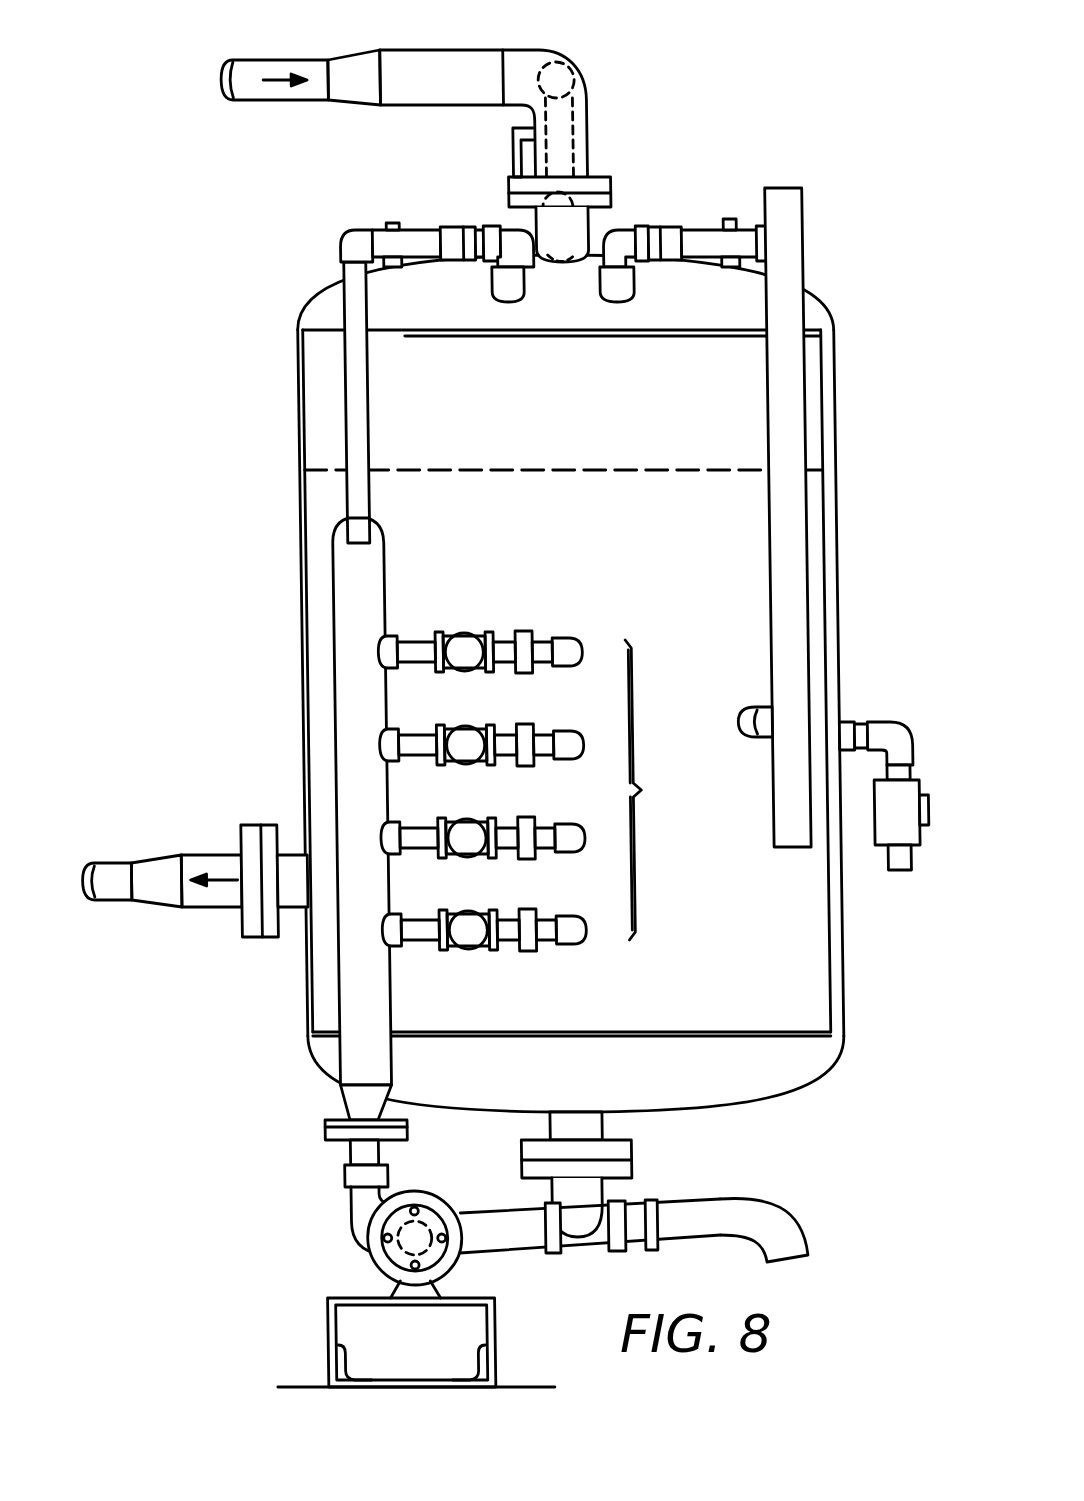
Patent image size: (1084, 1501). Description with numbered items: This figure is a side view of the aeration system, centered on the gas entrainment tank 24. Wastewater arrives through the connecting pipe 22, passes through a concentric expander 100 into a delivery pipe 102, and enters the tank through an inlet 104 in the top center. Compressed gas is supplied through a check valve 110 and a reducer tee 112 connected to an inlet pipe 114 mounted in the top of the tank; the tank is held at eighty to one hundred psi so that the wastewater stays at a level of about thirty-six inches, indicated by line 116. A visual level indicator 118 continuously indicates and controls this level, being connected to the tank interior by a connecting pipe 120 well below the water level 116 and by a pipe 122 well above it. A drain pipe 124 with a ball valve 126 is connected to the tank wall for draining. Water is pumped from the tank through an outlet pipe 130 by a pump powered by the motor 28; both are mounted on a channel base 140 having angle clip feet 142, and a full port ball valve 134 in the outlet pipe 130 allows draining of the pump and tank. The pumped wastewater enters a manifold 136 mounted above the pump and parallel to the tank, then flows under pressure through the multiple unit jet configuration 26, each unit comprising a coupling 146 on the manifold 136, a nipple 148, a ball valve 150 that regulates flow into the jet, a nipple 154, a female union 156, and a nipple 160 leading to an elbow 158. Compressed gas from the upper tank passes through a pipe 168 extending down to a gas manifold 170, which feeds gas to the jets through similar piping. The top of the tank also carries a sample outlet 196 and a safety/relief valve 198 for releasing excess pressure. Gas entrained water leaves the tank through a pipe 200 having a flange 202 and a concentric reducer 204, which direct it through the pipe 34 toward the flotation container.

The connecting pipe 22 is at (262, 100).
The gas entrainment tank 24 is at (545, 435).
The multiple unit jet configuration 26 is at (654, 790).
The motor 28 is at (351, 1248).
The pipe 34 is at (90, 863).
The concentric expander 100 is at (365, 58).
The delivery pipe 102 is at (428, 52).
The inlet 104 is at (530, 232).
The check valve 110 is at (596, 92).
The reducer tee 112 is at (597, 227).
The inlet pipe 114 is at (556, 268).
The line 116 is at (678, 470).
The visual level indicator 118 is at (800, 500).
The connecting pipe 120 is at (736, 707).
The pipe 122 is at (693, 230).
The drain pipe 124 is at (878, 723).
The ball valve 126 is at (900, 870).
The outlet pipe 130 is at (570, 1115).
The full port ball valve 134 is at (672, 1236).
The manifold 136 is at (327, 1062).
The channel base 140 is at (309, 1330).
The angle clip feet 142 is at (331, 1375).
The coupling 146 is at (382, 670).
The nipple 148 is at (398, 642).
The ball valve 150 is at (455, 634).
The nipple 154 is at (480, 673).
The female union 156 is at (514, 631).
The elbow 158 is at (565, 638).
The nipple 160 is at (533, 663).
The pipe 168 is at (403, 230).
The gas manifold 170 is at (376, 526).
The sample outlet 196 is at (733, 219).
The safety/relief valve 198 is at (384, 224).
The pipe 200 is at (276, 855).
The flange 202 is at (236, 825).
The concentric reducer 204 is at (145, 907).